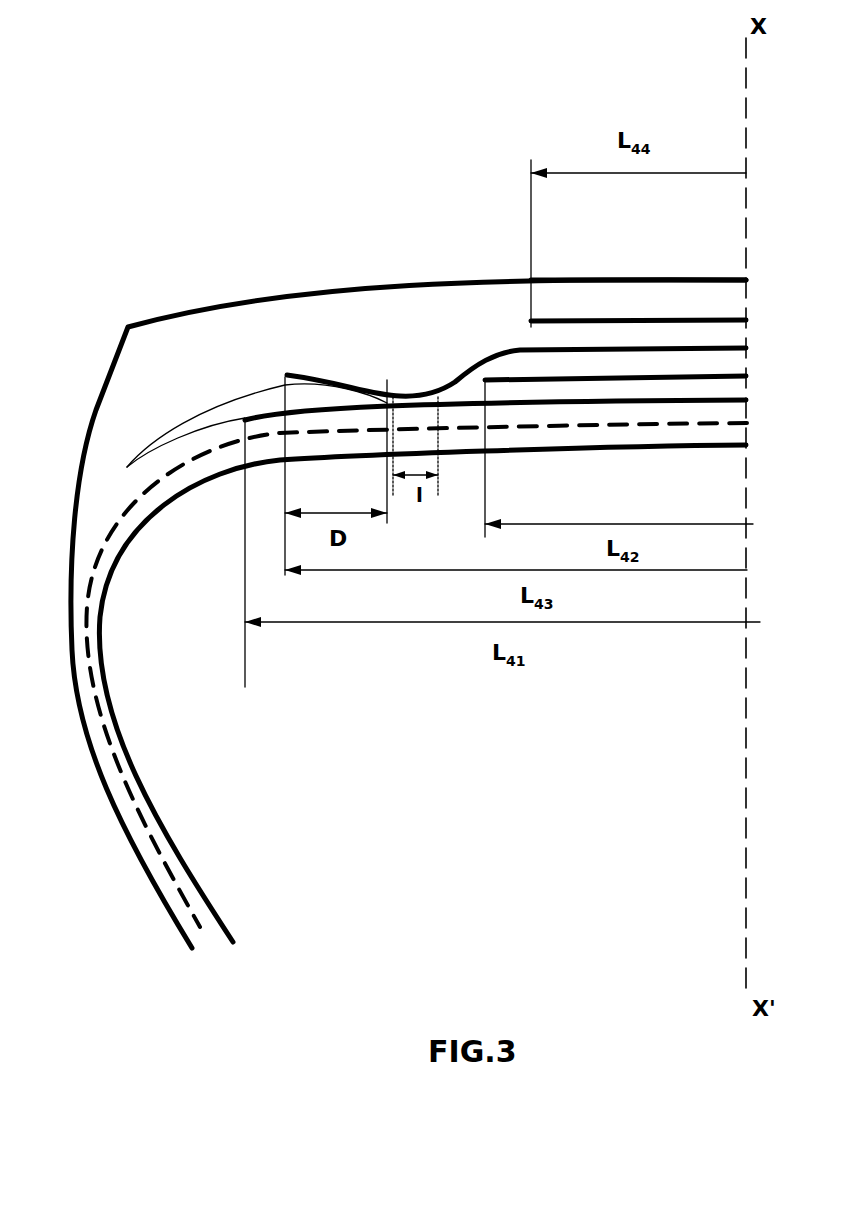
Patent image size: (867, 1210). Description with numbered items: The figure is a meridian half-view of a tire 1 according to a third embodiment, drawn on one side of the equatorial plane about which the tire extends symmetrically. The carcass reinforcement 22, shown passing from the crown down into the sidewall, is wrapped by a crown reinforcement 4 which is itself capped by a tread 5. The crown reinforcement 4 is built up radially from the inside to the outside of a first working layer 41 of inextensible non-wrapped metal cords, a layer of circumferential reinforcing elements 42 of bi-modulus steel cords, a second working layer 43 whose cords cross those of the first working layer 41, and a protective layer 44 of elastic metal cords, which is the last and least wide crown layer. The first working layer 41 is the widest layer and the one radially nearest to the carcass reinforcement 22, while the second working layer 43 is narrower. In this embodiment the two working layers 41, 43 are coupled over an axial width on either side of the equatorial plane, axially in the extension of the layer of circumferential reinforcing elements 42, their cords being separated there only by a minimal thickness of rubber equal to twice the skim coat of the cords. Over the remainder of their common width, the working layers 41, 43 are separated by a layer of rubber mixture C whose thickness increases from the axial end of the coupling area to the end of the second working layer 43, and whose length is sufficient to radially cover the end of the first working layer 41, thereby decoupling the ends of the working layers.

The tire 1 is at (172, 228).
The carcass reinforcement 22 is at (105, 548).
The crown reinforcement 4 is at (763, 373).
The first working layer 41 is at (620, 408).
The layer of circumferential reinforcing elements 42 is at (550, 382).
The second working layer 43 is at (447, 383).
The protective layer 44 is at (563, 320).
The tread 5 is at (647, 293).
The layer of rubber mixture C is at (237, 405).